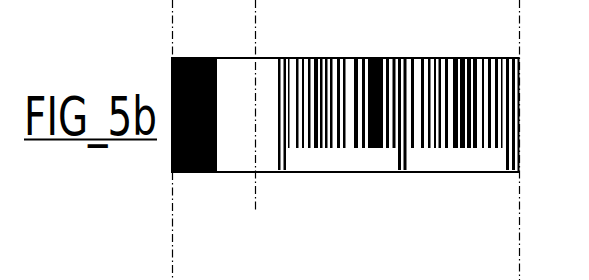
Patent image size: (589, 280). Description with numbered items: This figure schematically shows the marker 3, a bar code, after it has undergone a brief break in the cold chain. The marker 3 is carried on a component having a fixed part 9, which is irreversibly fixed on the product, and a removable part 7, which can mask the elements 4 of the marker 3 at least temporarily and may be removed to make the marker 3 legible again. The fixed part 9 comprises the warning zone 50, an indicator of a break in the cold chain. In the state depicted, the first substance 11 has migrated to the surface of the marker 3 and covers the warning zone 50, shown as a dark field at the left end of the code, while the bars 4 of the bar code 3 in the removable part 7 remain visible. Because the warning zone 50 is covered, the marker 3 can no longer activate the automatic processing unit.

The marker 3 is at (492, 172).
The elements of the marker 4 is at (378, 58).
The removable part 7 is at (518, 227).
The fixed part 9 is at (253, 227).
The first substance 11 is at (172, 68).
The warning zone 50 is at (216, 180).